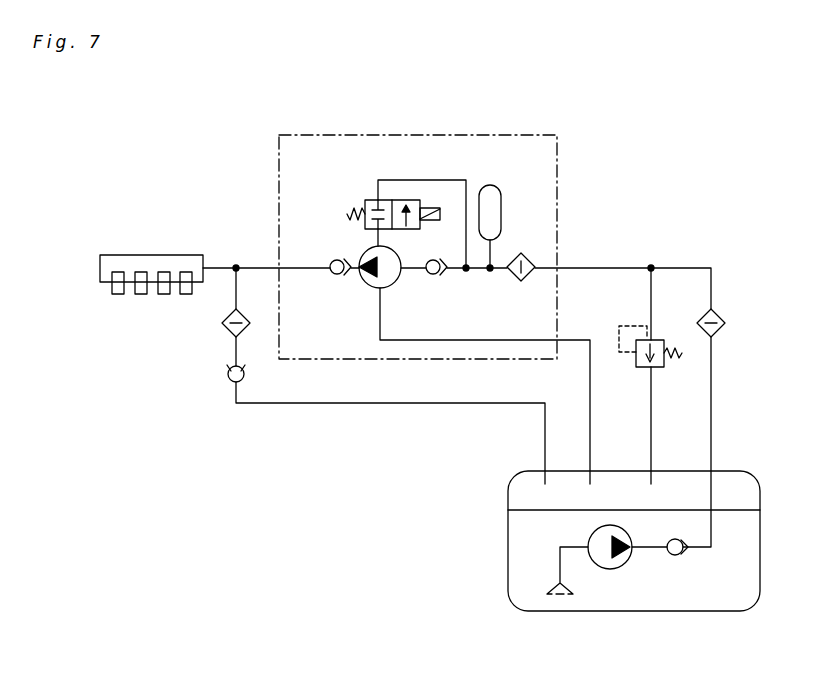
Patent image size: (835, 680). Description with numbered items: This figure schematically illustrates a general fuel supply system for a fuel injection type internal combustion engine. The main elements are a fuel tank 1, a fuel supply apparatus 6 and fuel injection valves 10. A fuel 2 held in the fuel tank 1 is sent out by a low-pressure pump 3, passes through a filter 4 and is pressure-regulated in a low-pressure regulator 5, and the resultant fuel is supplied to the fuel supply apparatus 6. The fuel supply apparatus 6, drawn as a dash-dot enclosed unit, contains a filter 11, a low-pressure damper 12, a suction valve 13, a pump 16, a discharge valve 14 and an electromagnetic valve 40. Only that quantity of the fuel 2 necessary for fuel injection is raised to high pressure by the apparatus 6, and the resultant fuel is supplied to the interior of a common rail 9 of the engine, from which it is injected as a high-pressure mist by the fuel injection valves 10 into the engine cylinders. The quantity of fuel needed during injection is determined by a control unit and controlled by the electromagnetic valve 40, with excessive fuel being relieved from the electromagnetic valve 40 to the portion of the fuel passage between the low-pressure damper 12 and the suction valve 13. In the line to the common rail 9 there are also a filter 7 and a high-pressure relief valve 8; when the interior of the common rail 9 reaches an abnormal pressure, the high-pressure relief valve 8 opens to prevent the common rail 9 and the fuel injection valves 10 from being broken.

The fuel tank 1 is at (762, 569).
The fuel 2 is at (750, 524).
The low-pressure pump 3 is at (624, 563).
The filter 4 is at (724, 313).
The low-pressure regulator 5 is at (666, 370).
The fuel supply apparatus 6 is at (512, 135).
The filter 7 is at (224, 330).
The high-pressure relief valve 8 is at (229, 384).
The common rail 9 is at (173, 253).
The fuel injection valves 10 is at (118, 294).
The filter 11 is at (534, 258).
The low-pressure damper 12 is at (502, 200).
The suction valve 13 is at (437, 278).
The discharge valve 14 is at (338, 277).
The pump 16 is at (362, 250).
The electromagnetic valve 40 is at (366, 196).